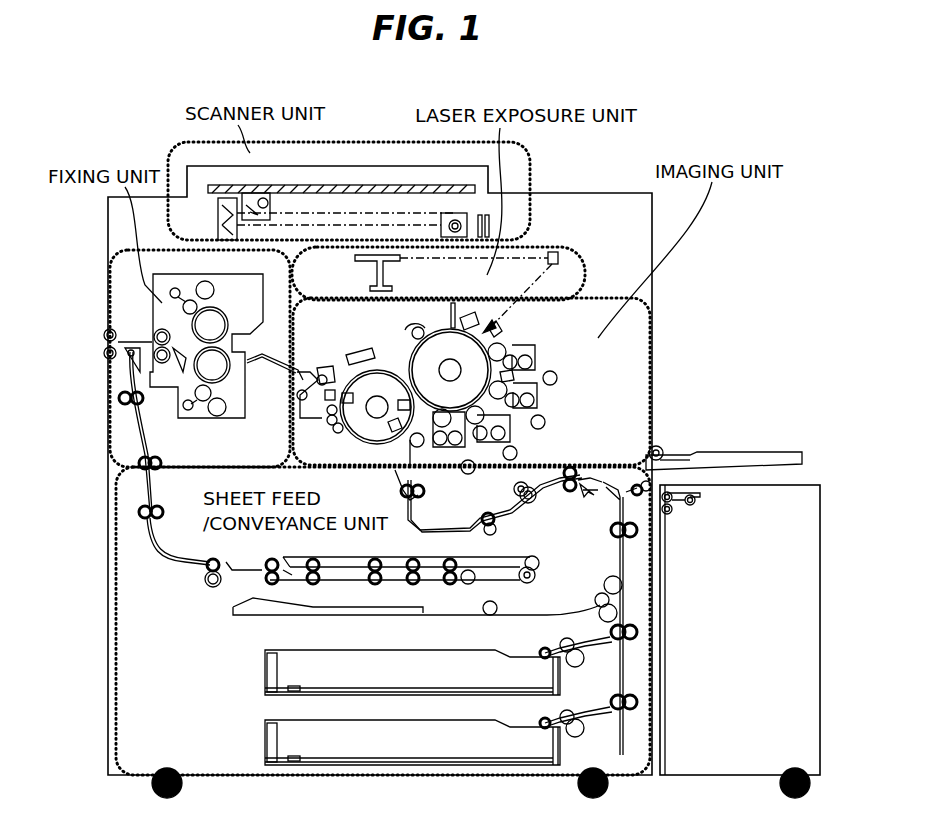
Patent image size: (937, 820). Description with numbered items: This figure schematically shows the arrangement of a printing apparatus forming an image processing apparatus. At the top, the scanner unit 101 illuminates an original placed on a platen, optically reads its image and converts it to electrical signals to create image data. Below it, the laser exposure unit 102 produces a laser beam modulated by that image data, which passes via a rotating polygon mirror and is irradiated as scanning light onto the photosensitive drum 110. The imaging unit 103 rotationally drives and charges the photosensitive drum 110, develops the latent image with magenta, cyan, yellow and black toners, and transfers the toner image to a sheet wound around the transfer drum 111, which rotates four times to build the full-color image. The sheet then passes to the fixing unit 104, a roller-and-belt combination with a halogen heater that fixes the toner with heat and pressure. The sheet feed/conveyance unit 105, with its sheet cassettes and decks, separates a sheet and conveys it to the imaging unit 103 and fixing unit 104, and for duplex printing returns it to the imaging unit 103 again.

The scanner unit 101 is at (536, 172).
The laser exposure unit 102 is at (572, 250).
The imaging unit 103 is at (640, 302).
The fixing unit 104 is at (113, 262).
The sheet feed/conveyance unit 105 is at (116, 476).
The photosensitive drum 110 is at (430, 340).
The transfer drum 111 is at (378, 373).